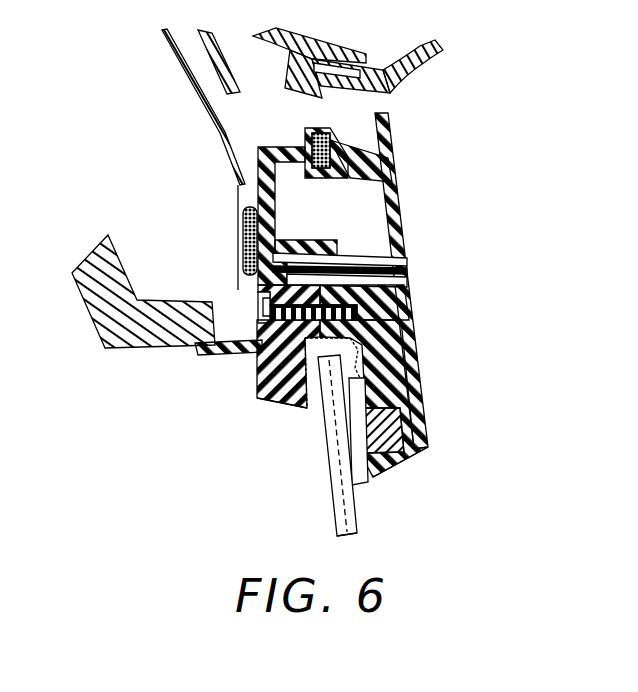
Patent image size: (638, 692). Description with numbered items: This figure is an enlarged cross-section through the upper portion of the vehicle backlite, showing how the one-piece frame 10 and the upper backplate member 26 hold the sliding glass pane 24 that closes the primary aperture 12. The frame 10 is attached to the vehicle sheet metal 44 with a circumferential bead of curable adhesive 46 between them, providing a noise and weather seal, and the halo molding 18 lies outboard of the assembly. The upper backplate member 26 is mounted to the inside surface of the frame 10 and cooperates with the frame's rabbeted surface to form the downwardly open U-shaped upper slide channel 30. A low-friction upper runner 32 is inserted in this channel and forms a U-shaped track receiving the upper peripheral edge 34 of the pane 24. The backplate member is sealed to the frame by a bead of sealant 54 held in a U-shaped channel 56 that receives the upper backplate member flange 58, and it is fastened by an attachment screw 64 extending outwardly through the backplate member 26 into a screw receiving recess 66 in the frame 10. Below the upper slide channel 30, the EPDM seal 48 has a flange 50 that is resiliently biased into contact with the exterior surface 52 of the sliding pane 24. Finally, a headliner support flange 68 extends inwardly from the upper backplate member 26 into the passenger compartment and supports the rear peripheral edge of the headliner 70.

The frame 10 is at (395, 183).
The primary aperture 12 is at (402, 466).
The halo molding 18 is at (425, 62).
The sliding glass pane 24 is at (336, 503).
The upper backplate member 26 is at (305, 408).
The upper slide channel 30 is at (402, 375).
The upper runner 32 is at (396, 334).
The upper peripheral edge 34 is at (262, 400).
The sheet metal 44 is at (220, 140).
The bead of curable adhesive 46 is at (244, 238).
The EPDM seal 48 is at (420, 440).
The flange 50 is at (360, 482).
The exterior surface 52 is at (356, 520).
The bead of sealant 54 is at (342, 148).
The U-shaped channel 56 is at (305, 166).
The upper backplate member flange 58 is at (298, 147).
The attachment screw 64 is at (258, 318).
The screw receiving recess 66 is at (393, 312).
The headliner support flange 68 is at (210, 354).
The headliner 70 is at (100, 303).